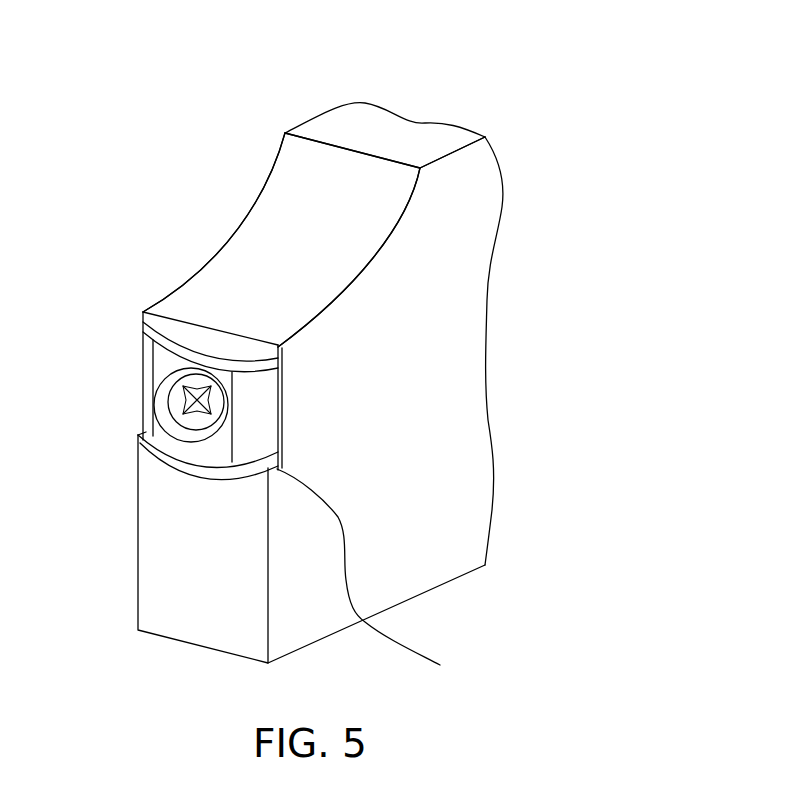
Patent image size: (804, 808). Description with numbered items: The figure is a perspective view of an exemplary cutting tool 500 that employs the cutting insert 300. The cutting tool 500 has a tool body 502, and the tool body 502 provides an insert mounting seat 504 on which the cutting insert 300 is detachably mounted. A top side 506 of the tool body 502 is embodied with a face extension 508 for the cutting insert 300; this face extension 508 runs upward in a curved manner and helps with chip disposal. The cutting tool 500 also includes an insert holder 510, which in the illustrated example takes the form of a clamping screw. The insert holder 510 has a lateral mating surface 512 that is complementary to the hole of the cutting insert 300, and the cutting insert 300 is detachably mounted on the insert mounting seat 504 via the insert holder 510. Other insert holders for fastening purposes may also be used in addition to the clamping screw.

The cutting tool 500 is at (558, 73).
The tool body 502 is at (475, 304).
The insert mounting seat 504 is at (383, 575).
The top side 506 is at (363, 115).
The face extension 508 is at (246, 233).
The cutting insert 300 is at (141, 362).
The insert holder 510 is at (193, 420).
The lateral mating surface 512 is at (170, 398).